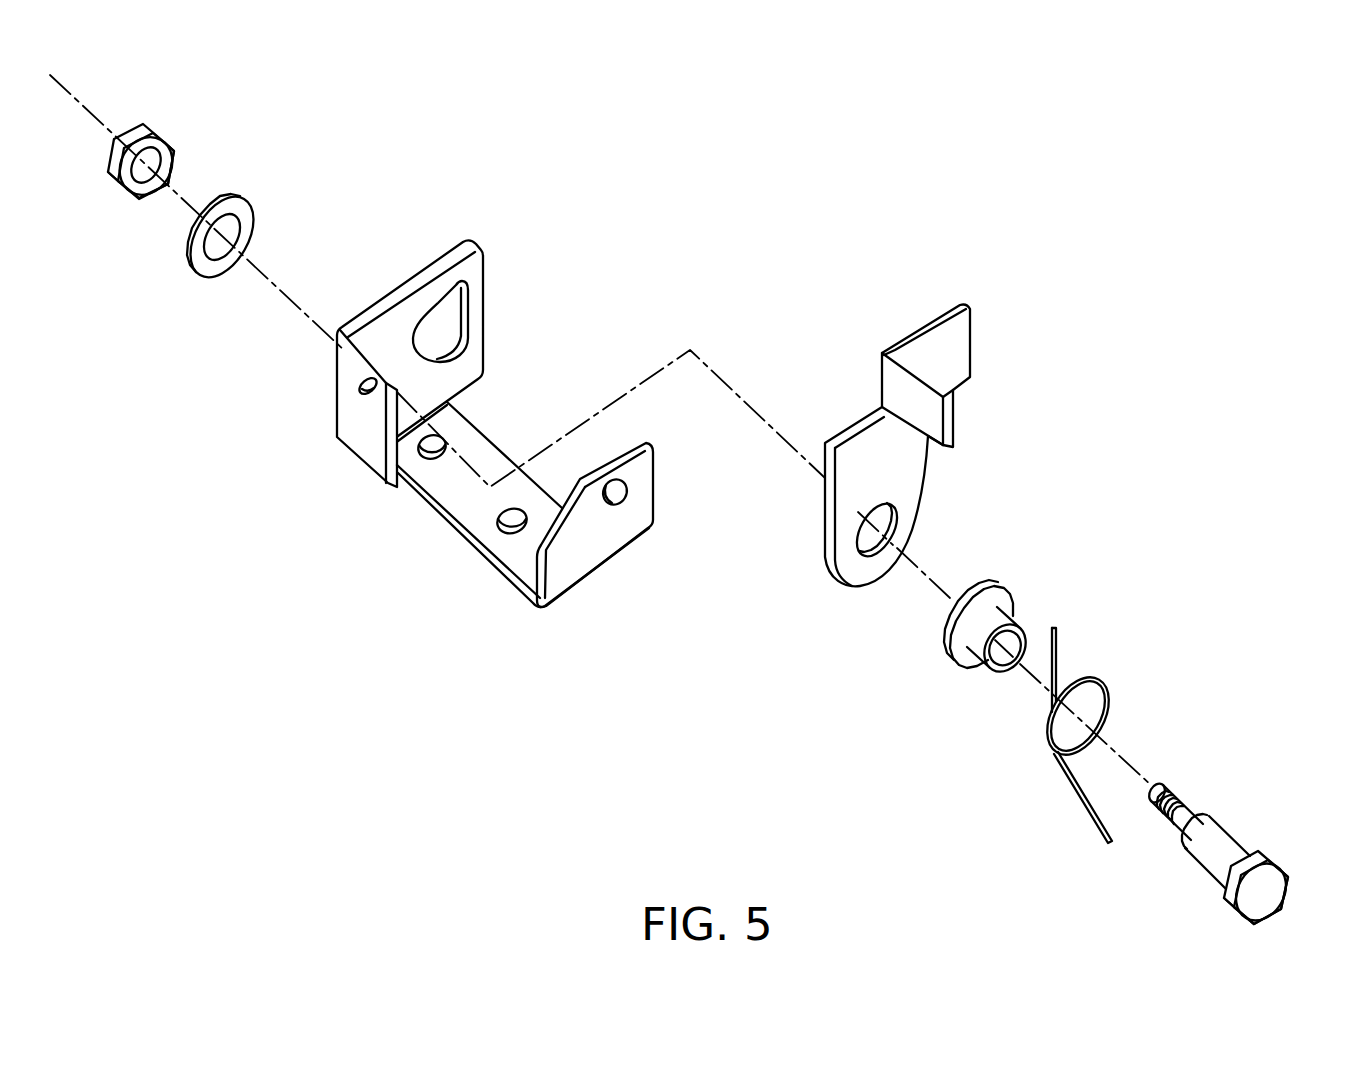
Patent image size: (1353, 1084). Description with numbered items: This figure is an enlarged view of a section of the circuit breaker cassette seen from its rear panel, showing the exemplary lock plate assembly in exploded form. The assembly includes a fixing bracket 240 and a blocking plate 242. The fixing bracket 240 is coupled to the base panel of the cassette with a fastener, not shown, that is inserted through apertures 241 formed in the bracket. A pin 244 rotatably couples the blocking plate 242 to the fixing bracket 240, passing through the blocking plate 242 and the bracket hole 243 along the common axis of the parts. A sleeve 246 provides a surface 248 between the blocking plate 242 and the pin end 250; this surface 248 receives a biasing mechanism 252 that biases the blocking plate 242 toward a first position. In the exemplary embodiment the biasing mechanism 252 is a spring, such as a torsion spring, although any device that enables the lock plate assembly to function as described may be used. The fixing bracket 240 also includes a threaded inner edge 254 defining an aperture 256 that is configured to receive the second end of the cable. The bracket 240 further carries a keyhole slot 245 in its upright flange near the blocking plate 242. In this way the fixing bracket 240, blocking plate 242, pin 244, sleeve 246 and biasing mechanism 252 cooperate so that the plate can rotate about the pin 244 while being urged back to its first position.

The fixing bracket 240 is at (378, 356).
The apertures 241 is at (508, 523).
The blocking plate 242 is at (958, 336).
The flange hole 243 is at (626, 490).
The pin 244 is at (1249, 842).
The keyhole slot 245 is at (450, 345).
The sleeve 246 is at (1019, 573).
The surface 248 is at (998, 612).
The pin end 250 is at (1268, 890).
The biasing mechanism 252 is at (1056, 647).
The threaded inner edge 254 is at (363, 386).
The aperture 256 is at (363, 383).